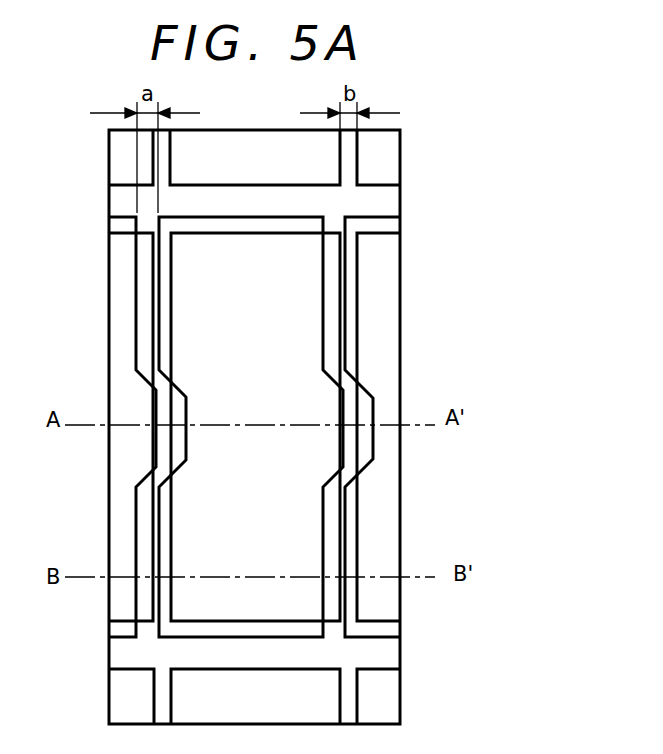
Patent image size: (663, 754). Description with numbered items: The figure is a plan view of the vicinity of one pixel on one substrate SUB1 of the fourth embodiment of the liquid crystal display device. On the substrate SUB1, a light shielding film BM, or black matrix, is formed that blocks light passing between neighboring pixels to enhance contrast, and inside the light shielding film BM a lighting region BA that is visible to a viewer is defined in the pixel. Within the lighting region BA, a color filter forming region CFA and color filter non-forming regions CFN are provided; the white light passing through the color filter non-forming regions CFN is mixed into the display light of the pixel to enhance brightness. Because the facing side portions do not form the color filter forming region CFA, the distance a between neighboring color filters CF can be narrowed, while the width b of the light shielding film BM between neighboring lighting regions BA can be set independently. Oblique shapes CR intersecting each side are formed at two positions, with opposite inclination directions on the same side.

The substrate SUB1 is at (400, 162).
The color filter forming region CFA is at (200, 280).
The color filter non-forming region CFN is at (333, 271).
The lighting region BA is at (340, 322).
The shape intersecting the side CR is at (186, 380).
The light shielding film BM is at (175, 535).
The color filter CF is at (330, 528).